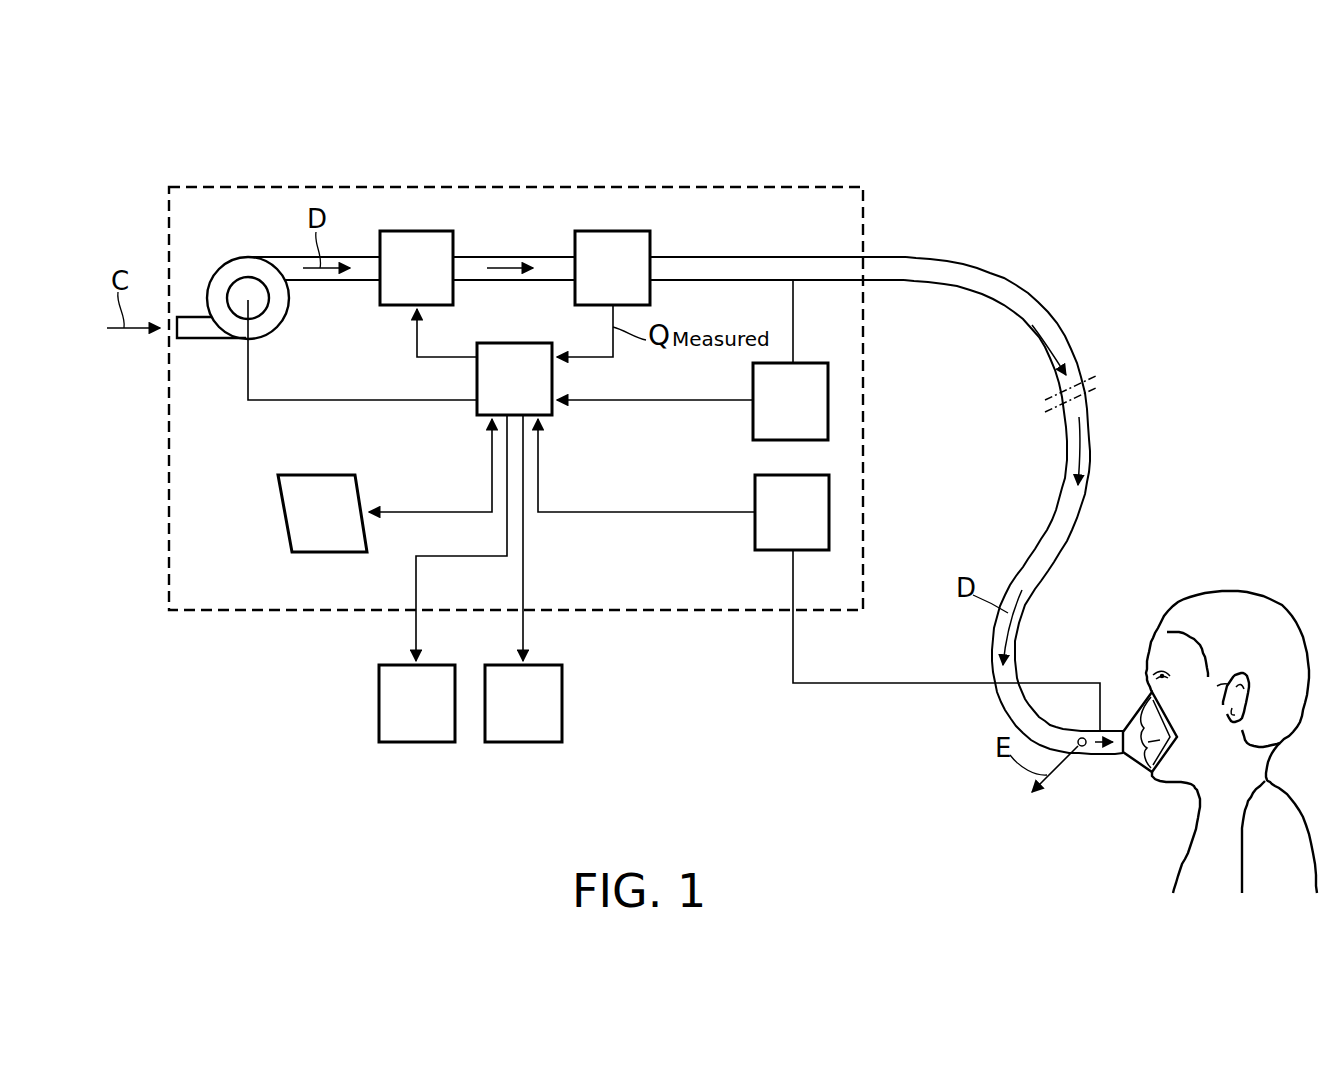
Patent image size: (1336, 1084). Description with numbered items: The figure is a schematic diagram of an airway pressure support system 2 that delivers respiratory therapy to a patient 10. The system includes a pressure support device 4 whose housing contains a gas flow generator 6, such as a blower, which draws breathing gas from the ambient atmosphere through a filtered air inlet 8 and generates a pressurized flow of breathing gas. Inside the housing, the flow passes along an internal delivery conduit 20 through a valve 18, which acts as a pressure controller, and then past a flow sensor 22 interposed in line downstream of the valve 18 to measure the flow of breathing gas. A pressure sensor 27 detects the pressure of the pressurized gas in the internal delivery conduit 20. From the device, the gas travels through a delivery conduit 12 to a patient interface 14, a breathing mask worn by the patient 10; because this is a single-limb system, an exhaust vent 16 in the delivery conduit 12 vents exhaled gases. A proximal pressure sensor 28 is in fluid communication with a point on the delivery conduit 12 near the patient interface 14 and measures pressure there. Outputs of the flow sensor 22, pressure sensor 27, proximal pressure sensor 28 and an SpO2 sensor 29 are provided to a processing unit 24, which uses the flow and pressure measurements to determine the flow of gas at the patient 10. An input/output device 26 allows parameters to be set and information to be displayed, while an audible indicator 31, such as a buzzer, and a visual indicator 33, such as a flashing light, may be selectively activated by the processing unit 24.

The airway pressure support system 2 is at (135, 157).
The pressure support device 4 is at (490, 187).
The gas flow generator 6 is at (225, 265).
The filtered air inlet 8 is at (171, 338).
The patient 10 is at (1243, 592).
The delivery conduit 12 is at (1093, 425).
The patient interface 14 is at (1140, 773).
The exhaust vent 16 is at (1085, 749).
The valve 18 is at (416, 268).
The internal delivery conduit 20 is at (752, 257).
The flow sensor 22 is at (612, 268).
The processing unit 24 is at (514, 379).
The input/output device 26 is at (322, 513).
The pressure sensor 27 is at (790, 401).
The proximal pressure sensor 28 is at (792, 512).
The SpO2 sensor 29 is at (1078, 683).
The audible indicator 31 is at (417, 703).
The visual indicator 33 is at (523, 703).